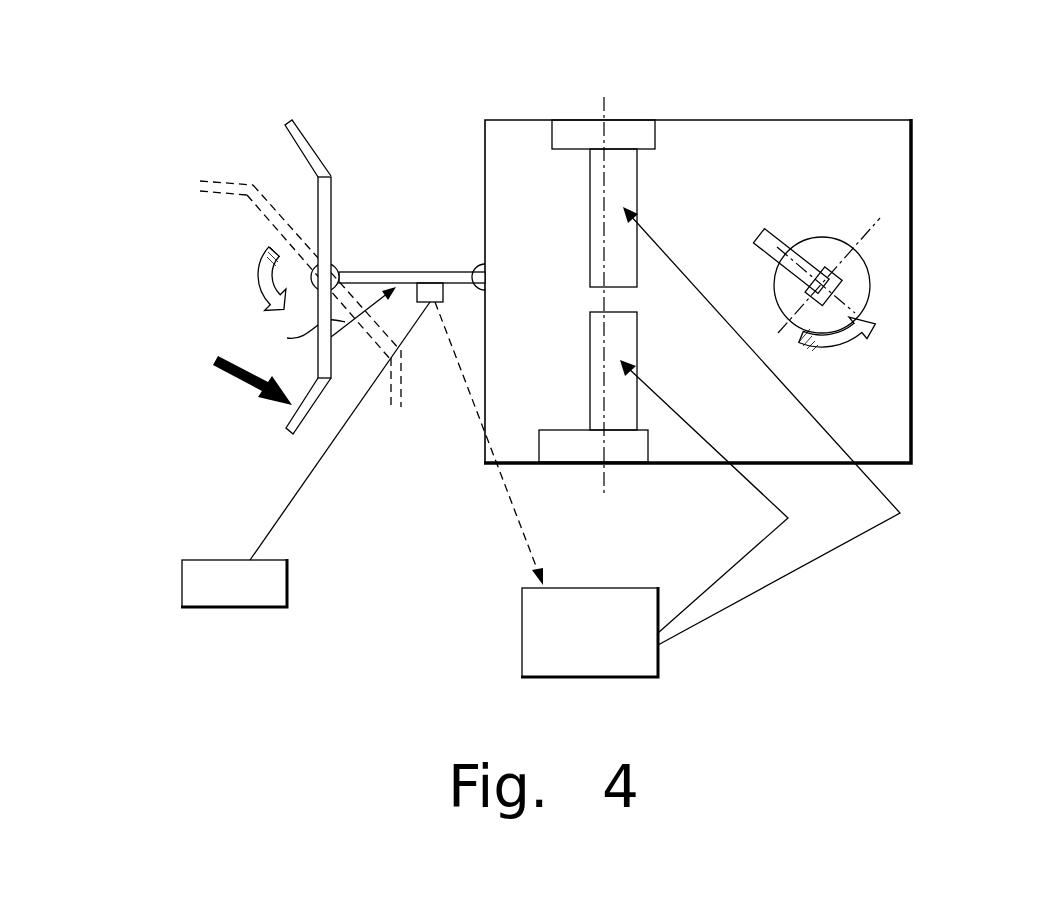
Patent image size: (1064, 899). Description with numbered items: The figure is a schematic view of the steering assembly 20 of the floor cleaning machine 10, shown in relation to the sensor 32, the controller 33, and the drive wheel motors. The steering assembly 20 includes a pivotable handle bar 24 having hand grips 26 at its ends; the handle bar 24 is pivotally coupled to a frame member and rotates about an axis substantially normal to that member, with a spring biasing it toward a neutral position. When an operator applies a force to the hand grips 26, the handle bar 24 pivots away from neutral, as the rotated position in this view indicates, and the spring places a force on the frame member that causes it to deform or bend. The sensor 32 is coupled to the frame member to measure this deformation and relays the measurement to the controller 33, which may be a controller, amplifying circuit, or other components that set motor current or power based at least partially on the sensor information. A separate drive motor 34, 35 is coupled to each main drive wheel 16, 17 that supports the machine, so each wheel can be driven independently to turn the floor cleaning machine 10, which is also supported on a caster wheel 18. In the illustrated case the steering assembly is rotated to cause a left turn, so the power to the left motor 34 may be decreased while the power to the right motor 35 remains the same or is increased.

The floor cleaning machine 10 is at (972, 118).
The main drive wheel 16 is at (640, 128).
The main drive wheel 17 is at (625, 452).
The caster wheel 18 is at (880, 233).
The steering assembly 20 is at (198, 270).
The handle bar 24 is at (332, 223).
The hand grips 26 is at (302, 138).
The sensor 32 is at (182, 566).
The controller 33 is at (522, 600).
The drive motor 34 is at (625, 183).
The drive motor 35 is at (627, 342).